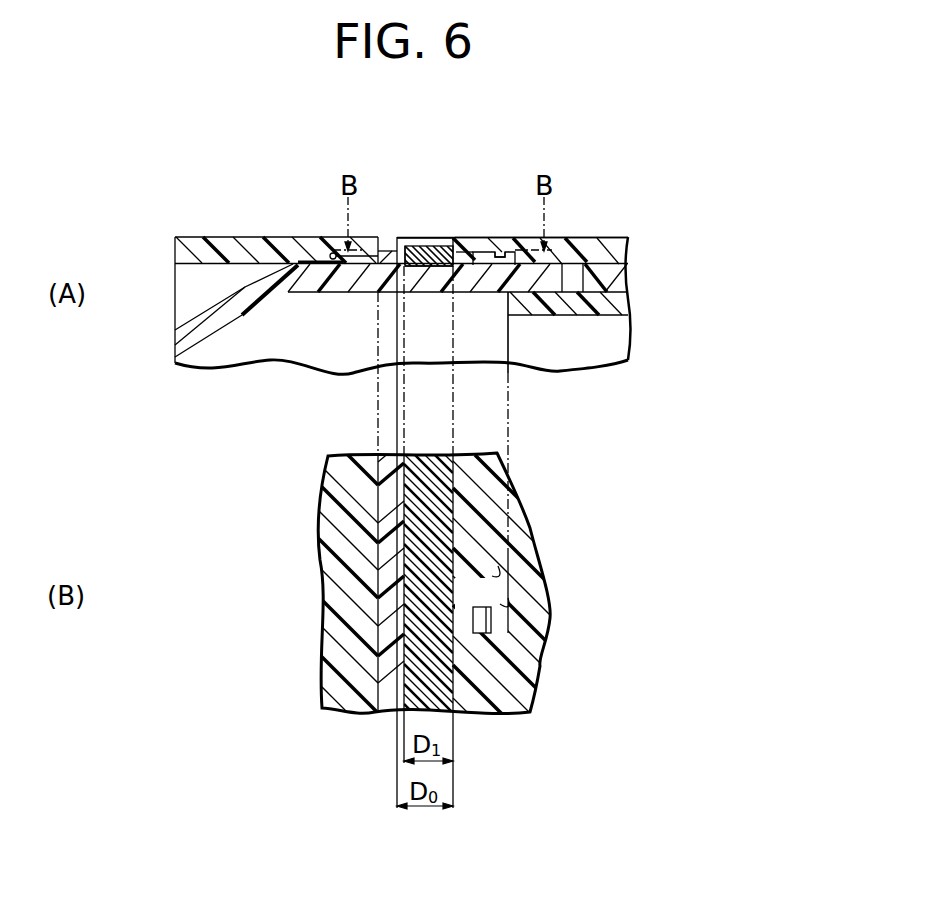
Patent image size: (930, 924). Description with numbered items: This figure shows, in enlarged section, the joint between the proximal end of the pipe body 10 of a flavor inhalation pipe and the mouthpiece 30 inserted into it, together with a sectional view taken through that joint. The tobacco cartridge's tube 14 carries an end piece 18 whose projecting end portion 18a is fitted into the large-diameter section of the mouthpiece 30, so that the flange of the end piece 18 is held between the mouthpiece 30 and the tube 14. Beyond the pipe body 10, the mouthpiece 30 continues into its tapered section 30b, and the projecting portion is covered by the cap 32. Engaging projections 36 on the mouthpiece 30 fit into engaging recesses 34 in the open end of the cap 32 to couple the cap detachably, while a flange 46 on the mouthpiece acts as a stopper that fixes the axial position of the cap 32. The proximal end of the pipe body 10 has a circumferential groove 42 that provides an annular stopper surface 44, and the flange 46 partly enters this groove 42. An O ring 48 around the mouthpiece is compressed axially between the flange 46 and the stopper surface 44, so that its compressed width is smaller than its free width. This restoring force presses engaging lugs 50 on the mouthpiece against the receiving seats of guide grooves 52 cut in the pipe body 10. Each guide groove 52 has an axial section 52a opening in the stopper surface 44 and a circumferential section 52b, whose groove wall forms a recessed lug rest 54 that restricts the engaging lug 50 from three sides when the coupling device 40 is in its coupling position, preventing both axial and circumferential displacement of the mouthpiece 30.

The pipe body 10 is at (597, 237).
The tube 14 is at (618, 272).
The end piece 18 is at (620, 305).
The projecting end portion 18a is at (508, 293).
The mouthpiece 30 is at (459, 247).
The tapered section 30b is at (194, 320).
The cap 32 is at (243, 237).
The engaging recesses 34 is at (333, 259).
The engaging projections 36 is at (331, 253).
The coupling device 40 is at (401, 199).
The circumferential groove 42 is at (414, 245).
The stopper surface 44 is at (437, 248).
The flange 46 is at (388, 250).
The O ring 48 is at (428, 268).
The engaging lugs 50 is at (485, 252).
The guide grooves 52 is at (503, 252).
The axial section 52a is at (498, 568).
The circumferential section 52b is at (508, 600).
The lug rest 54 is at (491, 619).